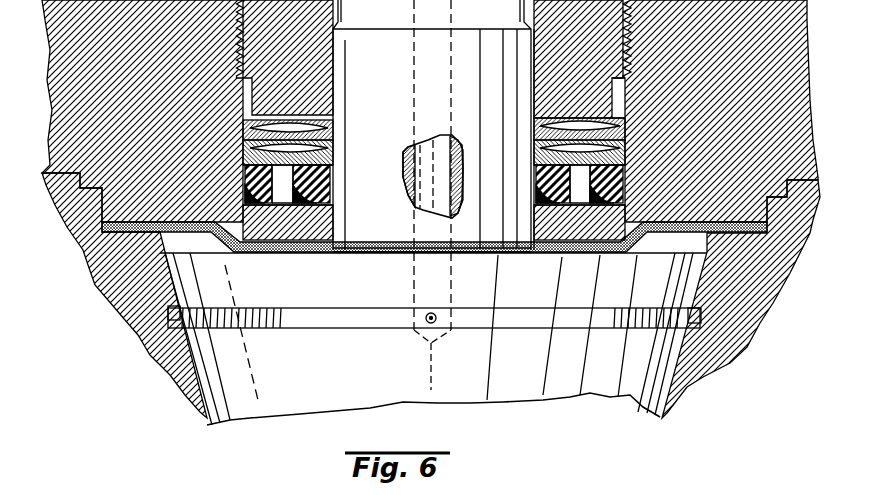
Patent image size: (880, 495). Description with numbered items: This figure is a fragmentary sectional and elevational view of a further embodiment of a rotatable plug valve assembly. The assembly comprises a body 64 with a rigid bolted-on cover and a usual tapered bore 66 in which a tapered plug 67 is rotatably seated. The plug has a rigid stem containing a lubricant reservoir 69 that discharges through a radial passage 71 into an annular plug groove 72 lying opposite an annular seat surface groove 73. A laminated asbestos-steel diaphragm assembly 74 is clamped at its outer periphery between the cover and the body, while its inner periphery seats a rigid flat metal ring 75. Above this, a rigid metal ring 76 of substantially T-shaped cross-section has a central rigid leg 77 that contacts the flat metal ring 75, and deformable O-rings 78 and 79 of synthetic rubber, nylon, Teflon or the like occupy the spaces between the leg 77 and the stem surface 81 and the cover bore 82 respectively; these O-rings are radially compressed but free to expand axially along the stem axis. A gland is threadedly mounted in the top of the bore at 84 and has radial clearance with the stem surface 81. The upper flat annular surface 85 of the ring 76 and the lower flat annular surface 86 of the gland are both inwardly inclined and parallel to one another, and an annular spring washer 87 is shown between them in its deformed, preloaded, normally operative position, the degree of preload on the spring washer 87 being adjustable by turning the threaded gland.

The body 64 is at (775, 280).
The tapered bore 66 is at (677, 349).
The tapered plug 67 is at (405, 390).
The lubricant reservoir 69 is at (450, 143).
The radial passage 71 is at (432, 312).
The annular plug groove 72 is at (550, 308).
The annular seat surface groove 73 is at (703, 312).
The laminated asbestos-steel diaphragm assembly 74 is at (668, 213).
The rigid flat metal ring 75 is at (598, 254).
The T-shaped cross-section rigid metal ring 76 is at (620, 152).
The central rigid leg 77 is at (288, 222).
The O-ring 78 is at (331, 177).
The O-ring 79 is at (243, 181).
The stem surface 81 is at (536, 80).
The cover bore 82 is at (612, 98).
The threaded mounting 84 is at (630, 30).
The upper flat annular surface 85 is at (527, 150).
The lower flat annular surface 86 is at (620, 120).
The annular spring washer 87 is at (290, 120).